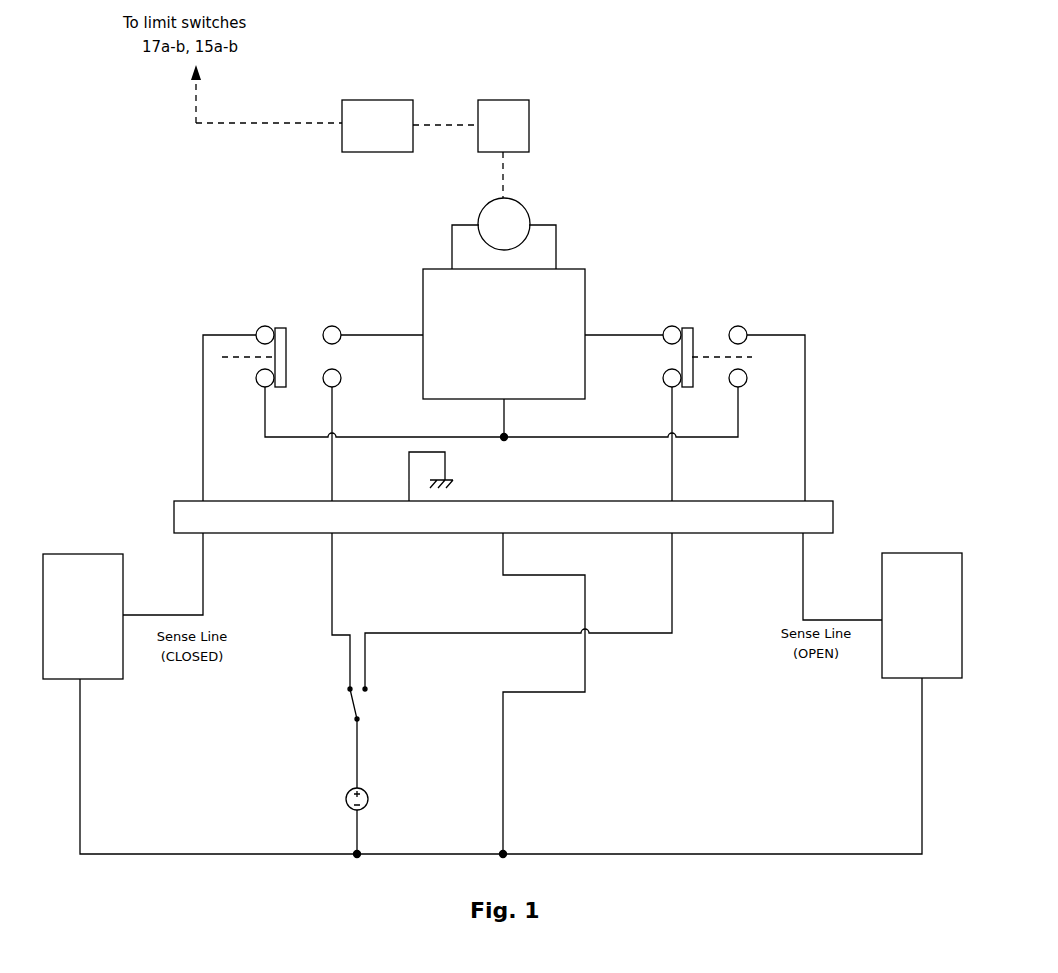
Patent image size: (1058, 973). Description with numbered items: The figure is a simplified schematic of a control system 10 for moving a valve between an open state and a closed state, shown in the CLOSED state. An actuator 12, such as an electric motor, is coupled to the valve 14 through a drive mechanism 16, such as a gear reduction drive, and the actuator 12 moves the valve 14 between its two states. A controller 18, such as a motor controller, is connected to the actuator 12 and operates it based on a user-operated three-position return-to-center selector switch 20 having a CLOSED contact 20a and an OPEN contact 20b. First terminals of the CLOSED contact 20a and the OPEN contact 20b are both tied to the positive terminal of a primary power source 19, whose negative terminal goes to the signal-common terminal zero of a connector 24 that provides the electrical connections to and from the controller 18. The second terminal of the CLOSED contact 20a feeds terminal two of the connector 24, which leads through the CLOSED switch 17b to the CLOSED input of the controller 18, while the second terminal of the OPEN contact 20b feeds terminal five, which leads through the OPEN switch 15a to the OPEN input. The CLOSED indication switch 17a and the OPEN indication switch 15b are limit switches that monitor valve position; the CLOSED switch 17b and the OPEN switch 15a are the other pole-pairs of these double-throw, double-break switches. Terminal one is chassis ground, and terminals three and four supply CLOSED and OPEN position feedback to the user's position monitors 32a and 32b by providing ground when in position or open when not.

The control system 10 is at (740, 175).
The actuator 12 is at (527, 210).
The valve 14 is at (376, 100).
The drive mechanism 16 is at (507, 100).
The controller 18 is at (585, 297).
The primary power source 19 is at (368, 802).
The selector switch 20 is at (331, 738).
The CLOSED contact 20a is at (328, 699).
The OPEN contact 20b is at (384, 699).
The connector 24 is at (815, 502).
The CLOSED indication switch 17a is at (266, 327).
The CLOSED switch 17b is at (332, 327).
The OPEN switch 15a is at (673, 327).
The OPEN indication switch 15b is at (735, 327).
The user's CLOSED position monitor 32a is at (82, 553).
The user's OPEN position monitor 32b is at (925, 553).